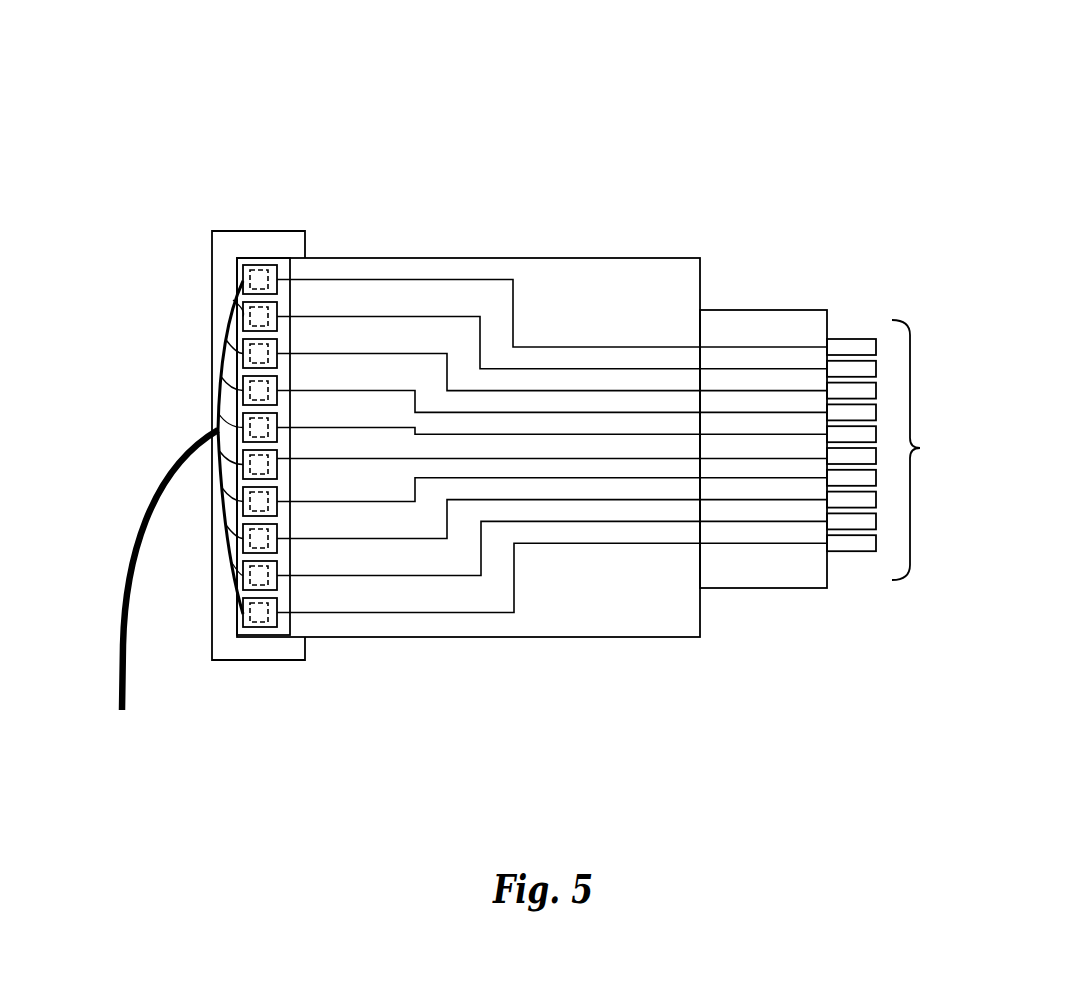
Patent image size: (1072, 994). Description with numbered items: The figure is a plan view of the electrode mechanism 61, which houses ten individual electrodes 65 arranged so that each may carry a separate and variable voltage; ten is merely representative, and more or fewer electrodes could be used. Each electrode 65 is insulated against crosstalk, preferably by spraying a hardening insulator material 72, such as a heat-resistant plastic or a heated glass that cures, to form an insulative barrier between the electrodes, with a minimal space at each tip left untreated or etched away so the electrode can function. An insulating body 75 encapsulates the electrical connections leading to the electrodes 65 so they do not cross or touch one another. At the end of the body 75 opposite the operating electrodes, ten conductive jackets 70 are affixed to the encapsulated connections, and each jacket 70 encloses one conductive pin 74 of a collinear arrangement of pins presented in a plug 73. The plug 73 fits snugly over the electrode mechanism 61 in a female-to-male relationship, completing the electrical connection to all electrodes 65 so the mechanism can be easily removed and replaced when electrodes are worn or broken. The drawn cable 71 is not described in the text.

The electrode mechanism 61 is at (522, 192).
The electrodes 65 is at (925, 447).
The conductive jackets 70 is at (279, 388).
The cable 71 is at (120, 637).
The hardening insulator material 72 is at (858, 338).
The plug 73 is at (267, 230).
The conductive pins 74 is at (243, 390).
The insulating body 75 is at (770, 588).